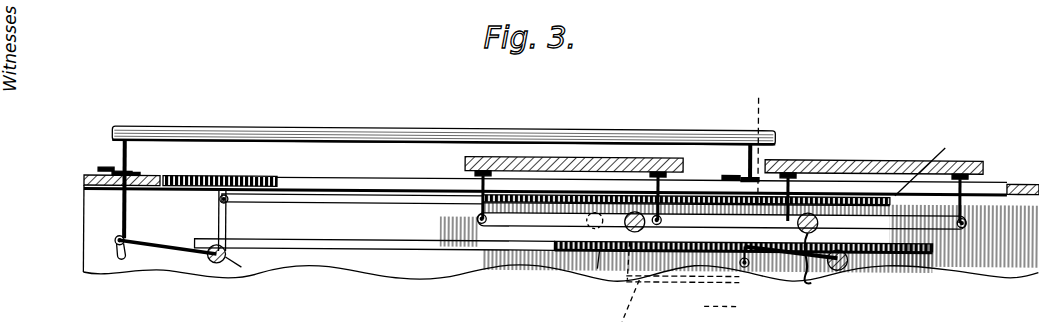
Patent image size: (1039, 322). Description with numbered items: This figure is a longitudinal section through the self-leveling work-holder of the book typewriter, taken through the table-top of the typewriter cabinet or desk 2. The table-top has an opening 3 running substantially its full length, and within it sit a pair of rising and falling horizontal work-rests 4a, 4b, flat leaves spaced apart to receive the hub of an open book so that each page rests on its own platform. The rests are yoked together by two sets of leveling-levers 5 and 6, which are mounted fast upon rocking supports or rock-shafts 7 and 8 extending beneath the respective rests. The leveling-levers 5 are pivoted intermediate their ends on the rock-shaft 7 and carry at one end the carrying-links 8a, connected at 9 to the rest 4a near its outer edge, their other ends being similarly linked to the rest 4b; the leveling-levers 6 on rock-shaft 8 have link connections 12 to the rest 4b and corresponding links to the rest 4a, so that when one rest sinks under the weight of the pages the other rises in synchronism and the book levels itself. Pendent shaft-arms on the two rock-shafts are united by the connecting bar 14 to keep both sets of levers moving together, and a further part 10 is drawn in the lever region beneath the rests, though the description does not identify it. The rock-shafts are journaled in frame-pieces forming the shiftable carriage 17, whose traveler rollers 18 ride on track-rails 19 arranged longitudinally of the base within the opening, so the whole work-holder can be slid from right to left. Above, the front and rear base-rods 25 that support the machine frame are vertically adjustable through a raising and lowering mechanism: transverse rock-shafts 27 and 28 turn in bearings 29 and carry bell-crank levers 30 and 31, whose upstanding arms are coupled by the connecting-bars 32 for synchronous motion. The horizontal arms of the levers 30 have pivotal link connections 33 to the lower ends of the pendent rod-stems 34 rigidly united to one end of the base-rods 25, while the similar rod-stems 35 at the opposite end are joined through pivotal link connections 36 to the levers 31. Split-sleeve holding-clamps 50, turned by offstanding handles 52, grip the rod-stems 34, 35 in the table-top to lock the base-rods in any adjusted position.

The typewriter cabinet or desk 2 is at (92, 208).
The opening 3 is at (346, 178).
The work-rest 4a is at (553, 153).
The work-rest 4b is at (893, 155).
The leveling-levers 5 is at (465, 277).
The leveling-levers 6 is at (948, 226).
The rocking support or rock-shaft 7 is at (628, 278).
The rocking support or rock-shaft 8 is at (806, 270).
The carrying-links 8a is at (817, 152).
The connection 9 is at (474, 170).
The carrier bar 10 is at (555, 235).
The link connections 12 is at (668, 186).
The coupling or connecting bar 14 is at (668, 280).
The shiftable carriage 17 is at (928, 163).
The traveler rollers 18 is at (598, 265).
The track-rails 19 is at (350, 238).
The base-rods 25 is at (406, 130).
The rock-shaft 27 is at (214, 263).
The rock-shaft 28 is at (845, 280).
The bearings 29 is at (228, 258).
The bell-crank levers 30 is at (178, 249).
The bell-crank levers 31 is at (768, 272).
The connecting-bars 32 is at (351, 222).
The pivotal link connections 33 is at (115, 252).
The rod-stems 34 is at (132, 216).
The rod-stems 35 is at (746, 148).
The pivotal link connections 36 is at (718, 256).
The holding-clamps 50 is at (132, 172).
The offstanding handles 52 is at (104, 167).